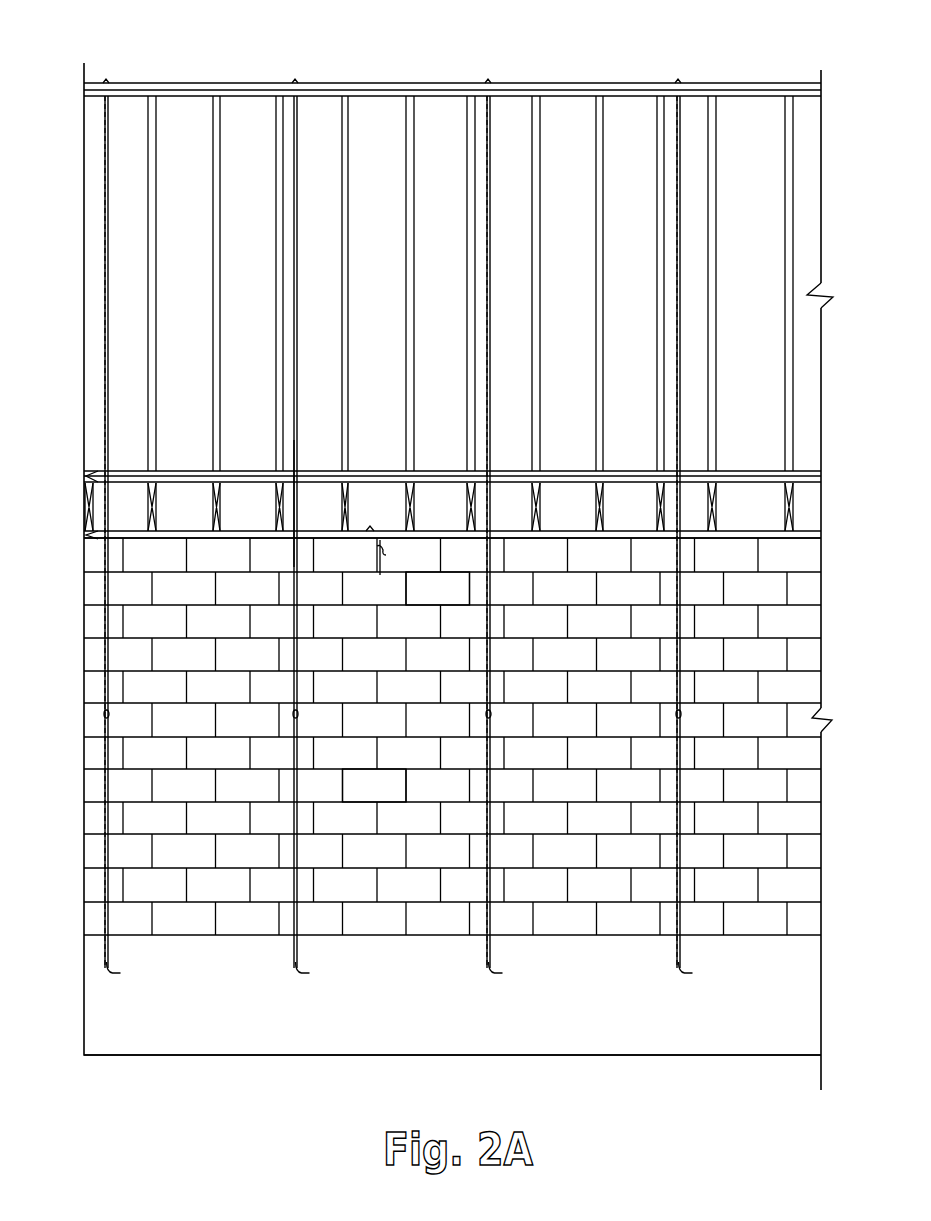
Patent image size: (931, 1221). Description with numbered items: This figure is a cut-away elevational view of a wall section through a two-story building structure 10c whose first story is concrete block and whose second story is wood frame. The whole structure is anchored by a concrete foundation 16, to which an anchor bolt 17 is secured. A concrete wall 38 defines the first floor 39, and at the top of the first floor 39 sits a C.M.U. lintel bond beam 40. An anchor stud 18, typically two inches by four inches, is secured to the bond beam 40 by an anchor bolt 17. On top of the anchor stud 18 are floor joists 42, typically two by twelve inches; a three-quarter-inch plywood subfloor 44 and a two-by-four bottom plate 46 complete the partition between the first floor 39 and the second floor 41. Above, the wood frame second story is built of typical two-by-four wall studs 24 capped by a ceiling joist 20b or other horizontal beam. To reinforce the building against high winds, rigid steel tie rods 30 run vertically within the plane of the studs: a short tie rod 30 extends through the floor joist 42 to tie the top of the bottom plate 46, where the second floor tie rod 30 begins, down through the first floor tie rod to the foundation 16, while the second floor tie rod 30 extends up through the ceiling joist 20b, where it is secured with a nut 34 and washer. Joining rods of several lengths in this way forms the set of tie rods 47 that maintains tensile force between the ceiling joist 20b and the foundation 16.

The building structure 10c is at (836, 776).
The foundation 16 is at (418, 1013).
The anchor bolt 17 is at (107, 974).
The anchor stud 18 is at (805, 542).
The ceiling joist 20b is at (821, 83).
The wall stud 24 is at (784, 305).
The tie rod 30 is at (107, 297).
The nut 34 is at (107, 80).
The concrete wall 38 is at (408, 781).
The first floor 39 is at (812, 692).
The C.M.U. lintel bond beam 40 is at (470, 585).
The second floor 41 is at (822, 248).
The floor joist 42 is at (775, 525).
The plywood subfloor 44 is at (803, 488).
The bottom plate 46 is at (807, 472).
The set of tie rods 47 is at (293, 440).